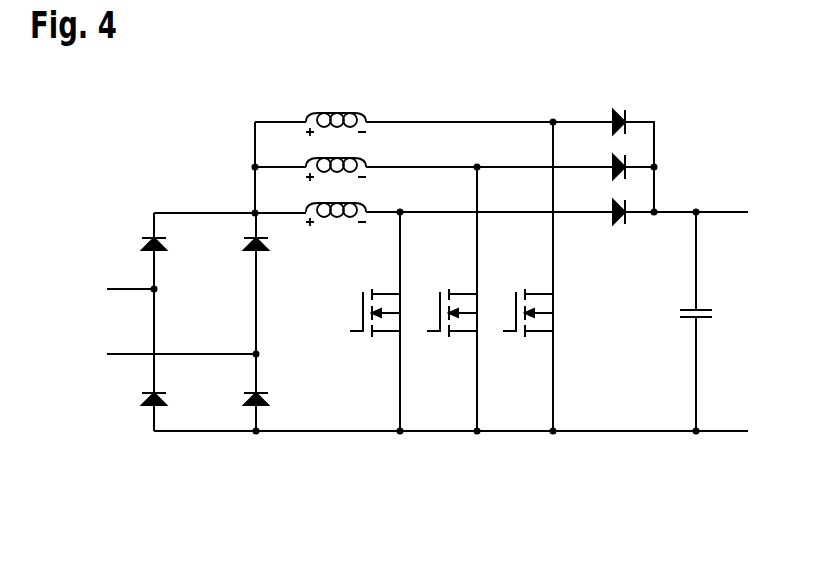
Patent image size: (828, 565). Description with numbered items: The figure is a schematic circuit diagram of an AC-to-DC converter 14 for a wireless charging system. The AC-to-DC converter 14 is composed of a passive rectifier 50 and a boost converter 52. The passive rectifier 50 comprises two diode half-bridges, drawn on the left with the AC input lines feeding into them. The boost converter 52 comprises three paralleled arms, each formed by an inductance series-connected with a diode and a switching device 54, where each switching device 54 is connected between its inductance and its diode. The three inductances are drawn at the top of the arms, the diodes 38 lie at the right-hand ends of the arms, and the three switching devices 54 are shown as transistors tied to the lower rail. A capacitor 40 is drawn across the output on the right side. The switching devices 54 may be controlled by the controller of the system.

The AC-to-DC converter 14 is at (271, 82).
The diodes 38 is at (699, 146).
The capacitor 40 is at (689, 320).
The passive rectifier 50 is at (208, 452).
The boost converter 52 is at (536, 454).
The switching device 54 is at (463, 293).